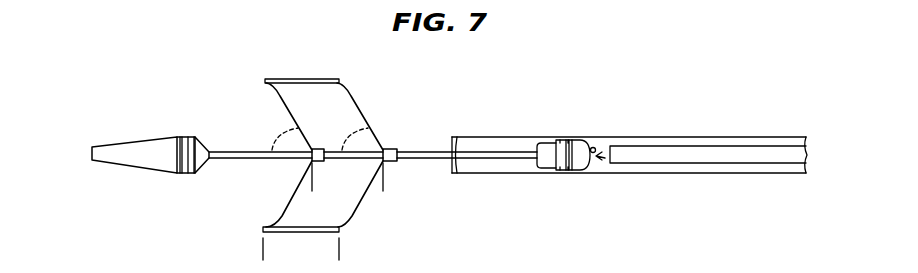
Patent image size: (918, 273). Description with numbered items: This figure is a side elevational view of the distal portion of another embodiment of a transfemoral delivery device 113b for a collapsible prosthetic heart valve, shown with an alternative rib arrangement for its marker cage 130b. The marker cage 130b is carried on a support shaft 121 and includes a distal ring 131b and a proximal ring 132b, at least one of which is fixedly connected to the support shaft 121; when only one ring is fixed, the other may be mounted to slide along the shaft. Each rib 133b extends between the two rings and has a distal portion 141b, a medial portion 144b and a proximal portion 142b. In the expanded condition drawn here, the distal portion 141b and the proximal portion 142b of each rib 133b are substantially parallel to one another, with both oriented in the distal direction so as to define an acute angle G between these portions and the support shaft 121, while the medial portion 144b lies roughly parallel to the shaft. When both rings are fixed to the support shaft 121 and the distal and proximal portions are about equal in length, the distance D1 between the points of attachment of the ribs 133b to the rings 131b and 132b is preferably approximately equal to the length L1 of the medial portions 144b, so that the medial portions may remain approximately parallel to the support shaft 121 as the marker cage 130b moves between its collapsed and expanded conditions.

The transfemoral delivery device 113b is at (158, 75).
The support shaft 121 is at (427, 148).
The marker cage 130b is at (335, 163).
The distal ring 131b is at (309, 163).
The proximal ring 132b is at (387, 148).
The distal portion of rib 141b is at (280, 100).
The proximal portion of rib 142b is at (351, 94).
The rib 133b is at (283, 216).
The medial portion of rib 144b is at (298, 224).
The acute angle G is at (282, 133).
The distance between rib attachment points D1 is at (383, 182).
The length of medial portion L1 is at (339, 254).